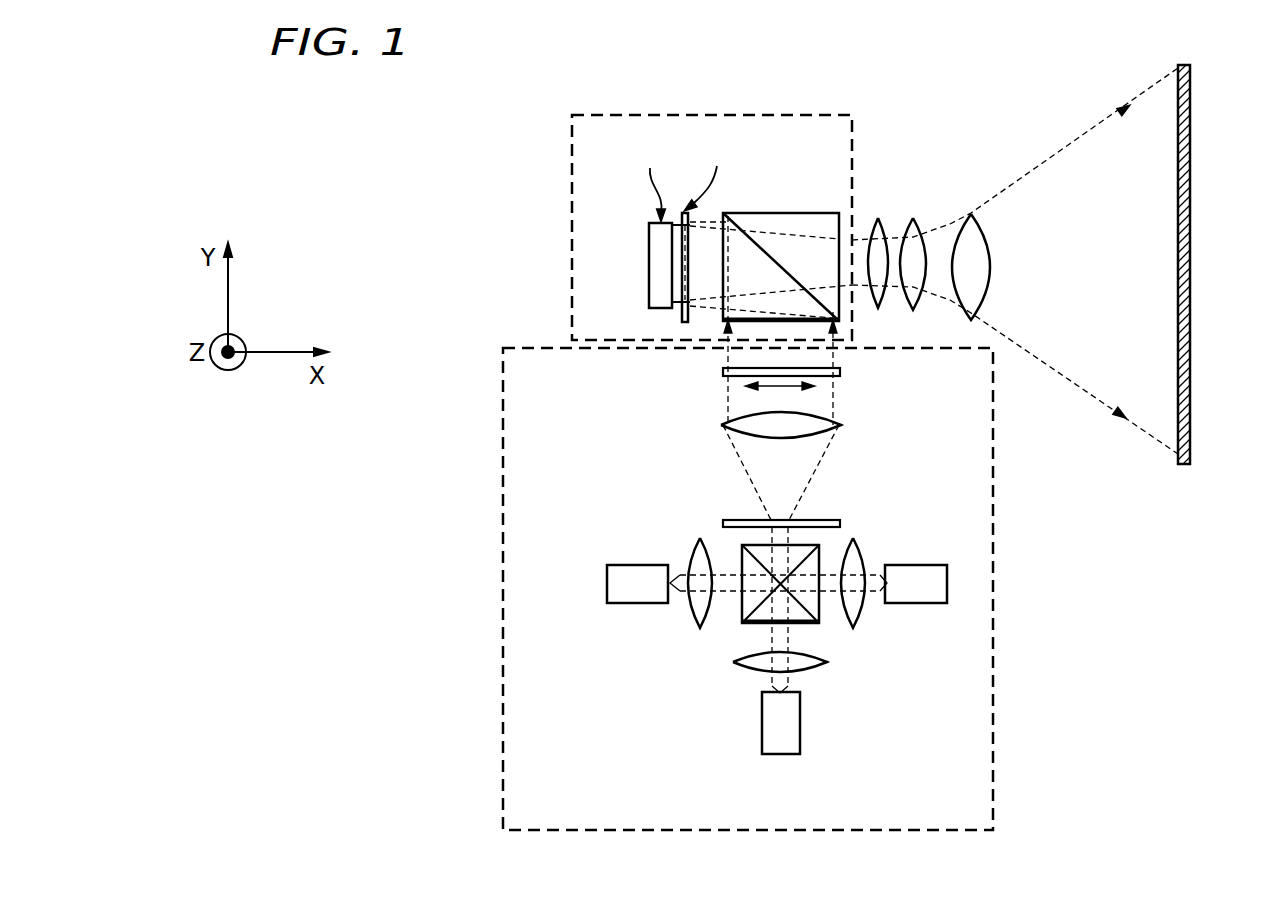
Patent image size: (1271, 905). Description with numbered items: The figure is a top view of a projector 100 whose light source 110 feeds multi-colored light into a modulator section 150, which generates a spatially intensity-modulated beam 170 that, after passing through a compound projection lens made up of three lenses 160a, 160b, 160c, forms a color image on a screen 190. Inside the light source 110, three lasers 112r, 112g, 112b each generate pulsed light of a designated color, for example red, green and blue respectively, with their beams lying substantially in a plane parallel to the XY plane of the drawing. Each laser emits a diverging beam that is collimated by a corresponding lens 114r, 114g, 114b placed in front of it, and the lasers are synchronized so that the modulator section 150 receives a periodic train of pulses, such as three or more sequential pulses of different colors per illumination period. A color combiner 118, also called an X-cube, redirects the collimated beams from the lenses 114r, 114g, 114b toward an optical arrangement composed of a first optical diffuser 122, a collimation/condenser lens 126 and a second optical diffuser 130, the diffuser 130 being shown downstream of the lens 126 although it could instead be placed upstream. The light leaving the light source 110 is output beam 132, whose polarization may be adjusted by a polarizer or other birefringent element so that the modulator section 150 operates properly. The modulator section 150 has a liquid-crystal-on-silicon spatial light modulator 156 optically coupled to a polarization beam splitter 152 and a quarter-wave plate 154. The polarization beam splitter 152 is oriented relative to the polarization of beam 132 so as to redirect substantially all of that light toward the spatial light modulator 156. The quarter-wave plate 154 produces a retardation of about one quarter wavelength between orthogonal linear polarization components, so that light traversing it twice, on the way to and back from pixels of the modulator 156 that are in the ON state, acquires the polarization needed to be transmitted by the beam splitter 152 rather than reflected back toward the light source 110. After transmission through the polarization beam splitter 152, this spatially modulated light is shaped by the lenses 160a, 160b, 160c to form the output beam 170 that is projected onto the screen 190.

The projector 100 is at (318, 105).
The light source 110 is at (503, 463).
The laser 112g is at (607, 583).
The laser 112r is at (915, 603).
The laser 112b is at (780, 754).
The lens 114g is at (697, 628).
The lens 114r is at (857, 548).
The lens 114b is at (748, 668).
The color combiner 118 is at (821, 628).
The first optical diffuser 122 is at (725, 520).
The collimation/condenser lens 126 is at (842, 426).
The second optical diffuser 130 is at (840, 373).
The output beam 132 is at (723, 367).
The modulator section 150 is at (572, 193).
The polarization beam splitter 152 is at (817, 212).
The quarter-wave plate 154 is at (682, 320).
The LCOS spatial light modulator 156 is at (649, 267).
The lens 160a is at (878, 218).
The lens 160b is at (913, 218).
The lens 160c is at (971, 214).
The spatially intensity-modulated beam 170 is at (1100, 122).
The screen 190 is at (1190, 230).